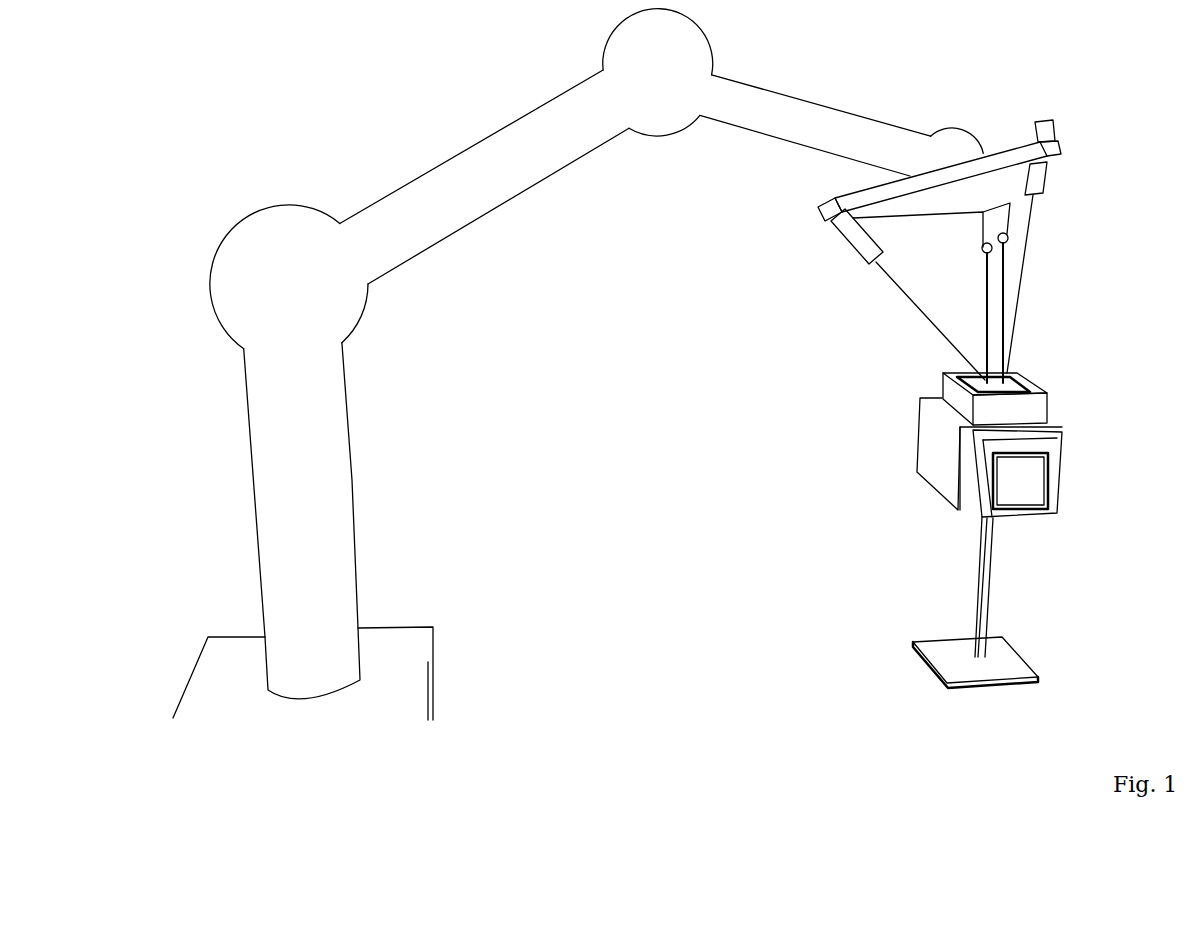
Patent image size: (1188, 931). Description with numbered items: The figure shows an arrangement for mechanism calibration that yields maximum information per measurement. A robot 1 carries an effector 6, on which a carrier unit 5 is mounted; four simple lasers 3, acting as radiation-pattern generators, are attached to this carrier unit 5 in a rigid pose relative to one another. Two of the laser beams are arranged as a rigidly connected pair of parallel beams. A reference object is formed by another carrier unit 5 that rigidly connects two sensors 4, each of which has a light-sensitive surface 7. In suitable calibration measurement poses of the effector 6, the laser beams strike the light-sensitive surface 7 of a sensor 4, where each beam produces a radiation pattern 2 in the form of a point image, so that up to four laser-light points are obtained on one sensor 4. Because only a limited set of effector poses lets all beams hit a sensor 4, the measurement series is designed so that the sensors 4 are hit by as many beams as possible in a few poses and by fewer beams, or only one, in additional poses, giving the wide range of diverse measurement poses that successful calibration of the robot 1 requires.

The robot 1 is at (357, 420).
The radiation pattern 2 is at (900, 302).
The laser 3 is at (838, 253).
The sensor 4 is at (1043, 407).
The carrier unit 5 is at (950, 203).
The effector 6 is at (980, 151).
The light-sensitive sensor surface 7 is at (1023, 377).